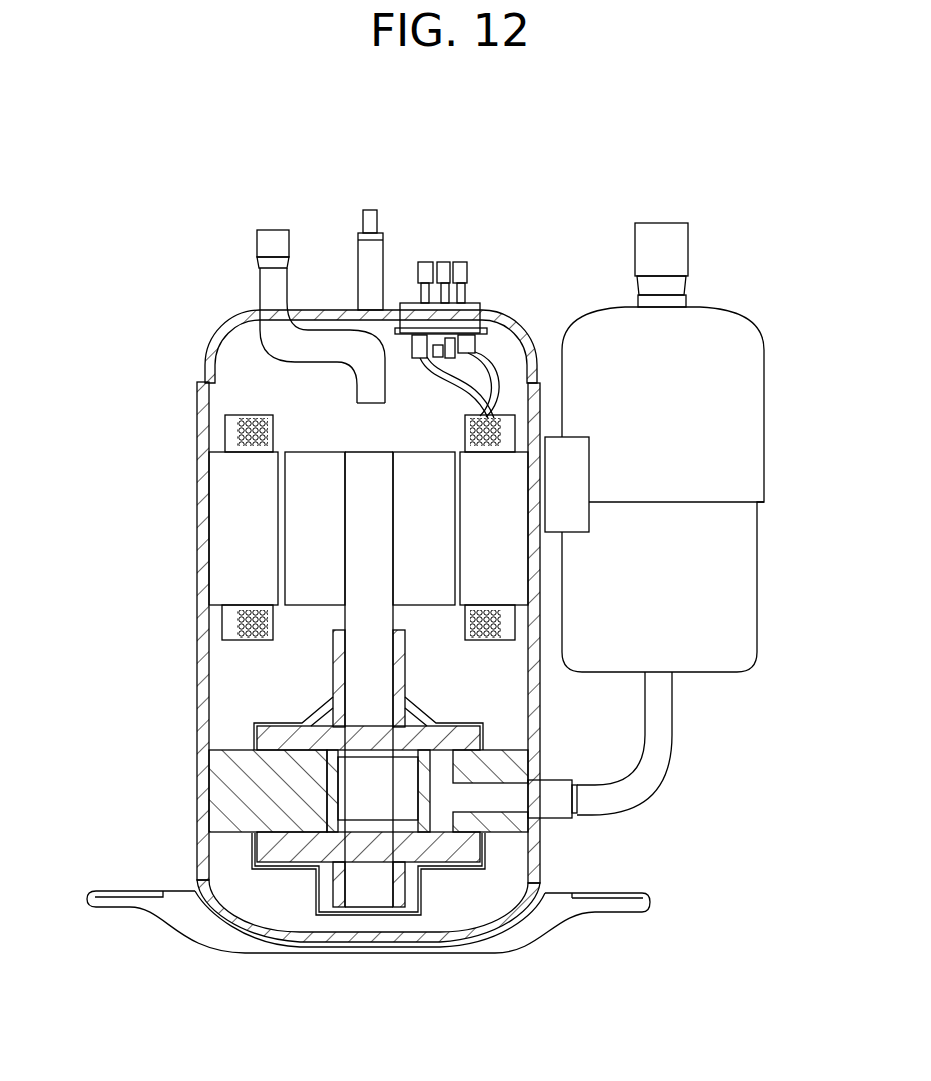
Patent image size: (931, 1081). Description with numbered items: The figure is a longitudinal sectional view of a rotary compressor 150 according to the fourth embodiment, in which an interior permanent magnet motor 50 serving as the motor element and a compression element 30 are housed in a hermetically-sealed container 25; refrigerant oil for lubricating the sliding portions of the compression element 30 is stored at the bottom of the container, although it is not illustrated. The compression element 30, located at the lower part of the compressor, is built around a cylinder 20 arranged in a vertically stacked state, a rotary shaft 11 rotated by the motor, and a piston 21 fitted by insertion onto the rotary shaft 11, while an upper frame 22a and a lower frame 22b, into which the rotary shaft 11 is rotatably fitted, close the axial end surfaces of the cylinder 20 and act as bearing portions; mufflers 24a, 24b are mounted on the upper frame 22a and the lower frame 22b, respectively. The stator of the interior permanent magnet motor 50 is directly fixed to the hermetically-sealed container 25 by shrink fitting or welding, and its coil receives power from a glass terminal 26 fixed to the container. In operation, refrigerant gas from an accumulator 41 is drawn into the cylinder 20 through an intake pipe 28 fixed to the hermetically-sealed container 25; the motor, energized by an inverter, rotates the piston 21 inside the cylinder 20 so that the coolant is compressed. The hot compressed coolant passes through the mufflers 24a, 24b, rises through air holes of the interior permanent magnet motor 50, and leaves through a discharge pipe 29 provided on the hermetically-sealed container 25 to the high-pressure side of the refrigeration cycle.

The rotary compressor 150 is at (108, 180).
The hermetically-sealed container 25 is at (226, 322).
The interior permanent magnet motor 50 is at (236, 390).
The rotary shaft 11 is at (356, 590).
The discharge pipe 29 is at (313, 345).
The glass terminal 26 is at (445, 262).
The accumulator 41 is at (733, 378).
The intake pipe 28 is at (665, 715).
The upper frame 22a is at (460, 743).
The muffler 24a is at (320, 707).
The cylinder 20 is at (236, 768).
The piston 21 is at (330, 806).
The lower frame 22b is at (460, 845).
The muffler 24b is at (420, 872).
The compression element 30 is at (266, 907).